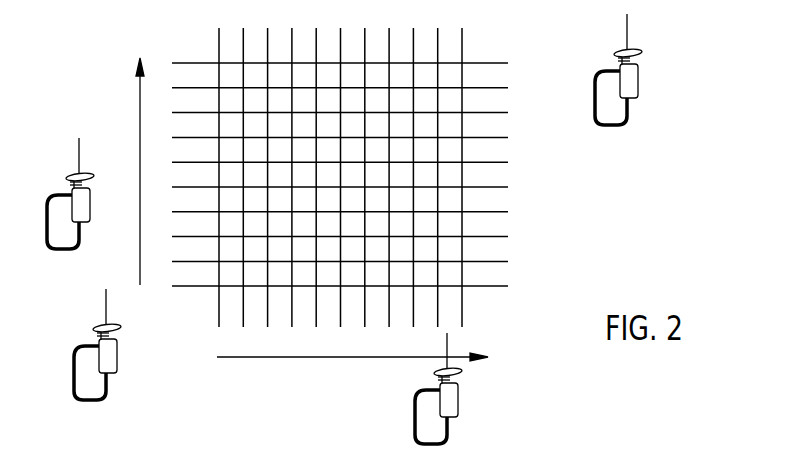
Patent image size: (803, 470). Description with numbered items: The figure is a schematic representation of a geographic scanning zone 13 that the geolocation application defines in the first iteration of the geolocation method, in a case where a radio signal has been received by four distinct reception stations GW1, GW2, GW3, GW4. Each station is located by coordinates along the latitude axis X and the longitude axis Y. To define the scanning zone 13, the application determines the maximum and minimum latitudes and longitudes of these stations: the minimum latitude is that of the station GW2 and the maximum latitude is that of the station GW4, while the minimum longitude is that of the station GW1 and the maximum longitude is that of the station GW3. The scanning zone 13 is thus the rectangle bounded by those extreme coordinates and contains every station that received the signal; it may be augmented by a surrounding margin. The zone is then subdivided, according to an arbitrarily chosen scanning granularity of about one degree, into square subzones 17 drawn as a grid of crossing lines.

The scanning zone 13 is at (368, 165).
The square subzones 17 is at (450, 149).
The station GW1 is at (219, 137).
The station GW2 is at (288, 287).
The station GW3 is at (462, 218).
The station GW4 is at (397, 63).
The latitude X is at (138, 99).
The longitude Y is at (462, 360).